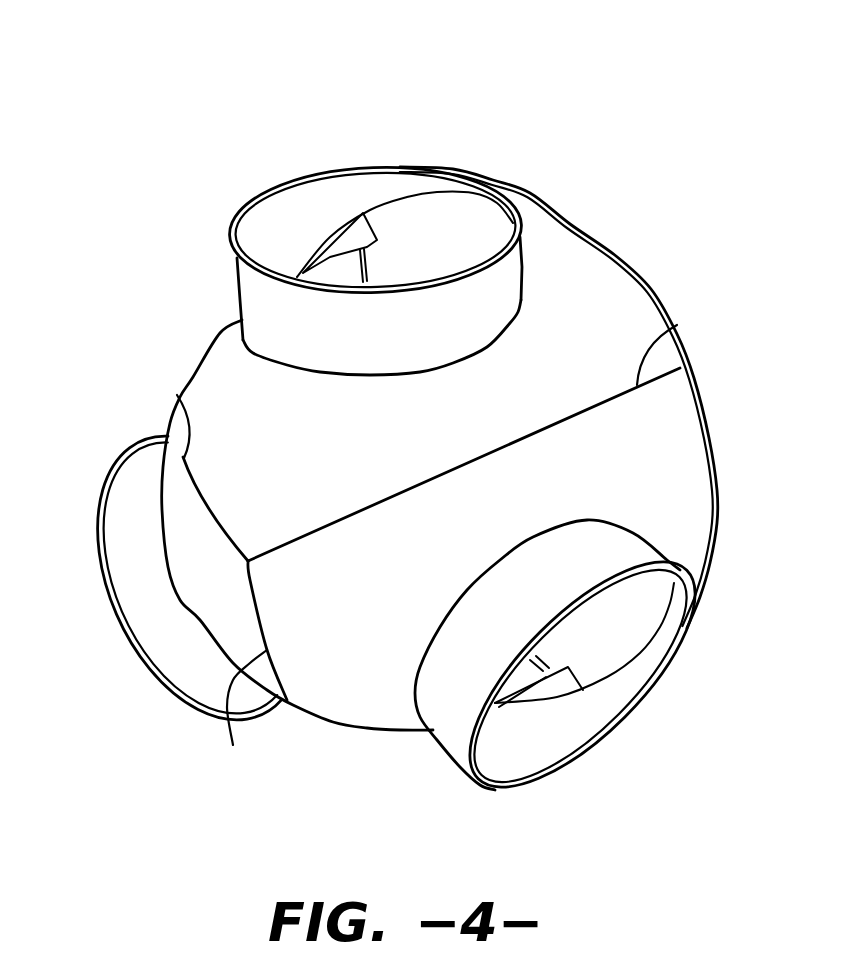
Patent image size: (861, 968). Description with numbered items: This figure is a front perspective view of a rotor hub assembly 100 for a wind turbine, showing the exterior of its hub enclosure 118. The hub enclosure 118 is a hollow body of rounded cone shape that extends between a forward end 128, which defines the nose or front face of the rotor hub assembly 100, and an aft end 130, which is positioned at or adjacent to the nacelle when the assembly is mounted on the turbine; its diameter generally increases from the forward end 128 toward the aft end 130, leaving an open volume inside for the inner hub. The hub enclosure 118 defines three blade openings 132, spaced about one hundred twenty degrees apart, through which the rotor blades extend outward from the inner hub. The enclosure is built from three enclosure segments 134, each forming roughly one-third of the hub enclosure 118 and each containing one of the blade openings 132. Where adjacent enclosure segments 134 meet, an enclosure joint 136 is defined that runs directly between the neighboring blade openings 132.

The rotor hub assembly 100 is at (417, 421).
The hub enclosure 118 is at (180, 244).
The forward end 128 is at (250, 563).
The aft end 130 is at (645, 283).
The blade openings 132 is at (427, 214).
The enclosure segments 134 is at (571, 262).
The enclosure joint 136 is at (186, 412).